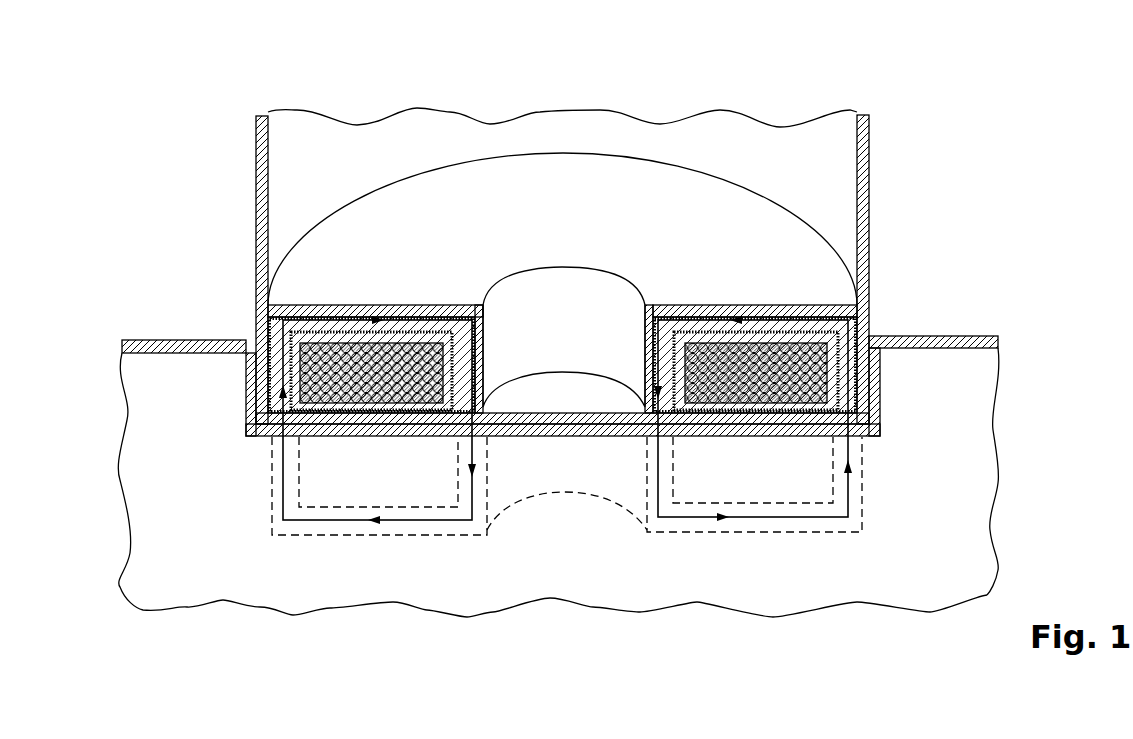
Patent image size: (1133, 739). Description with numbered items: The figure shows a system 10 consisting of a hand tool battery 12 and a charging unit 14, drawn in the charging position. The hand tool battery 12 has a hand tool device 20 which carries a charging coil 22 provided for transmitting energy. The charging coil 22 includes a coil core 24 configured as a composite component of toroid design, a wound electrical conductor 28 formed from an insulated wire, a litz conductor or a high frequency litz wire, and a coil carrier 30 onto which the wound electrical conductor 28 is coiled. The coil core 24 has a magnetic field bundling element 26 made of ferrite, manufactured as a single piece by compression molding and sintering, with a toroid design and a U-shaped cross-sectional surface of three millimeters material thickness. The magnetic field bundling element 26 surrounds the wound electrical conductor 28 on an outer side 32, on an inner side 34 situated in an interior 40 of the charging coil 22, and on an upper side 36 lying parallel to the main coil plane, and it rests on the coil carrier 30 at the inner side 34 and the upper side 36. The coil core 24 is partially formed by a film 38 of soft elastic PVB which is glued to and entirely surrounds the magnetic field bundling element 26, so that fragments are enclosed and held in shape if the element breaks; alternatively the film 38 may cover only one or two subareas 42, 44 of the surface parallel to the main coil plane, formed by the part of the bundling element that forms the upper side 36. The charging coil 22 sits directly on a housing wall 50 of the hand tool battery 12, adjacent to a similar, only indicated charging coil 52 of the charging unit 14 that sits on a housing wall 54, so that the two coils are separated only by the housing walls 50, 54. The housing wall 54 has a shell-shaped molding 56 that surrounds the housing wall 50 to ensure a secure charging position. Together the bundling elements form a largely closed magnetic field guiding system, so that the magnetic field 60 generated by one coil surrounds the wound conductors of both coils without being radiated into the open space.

The system 10 is at (633, 340).
The hand tool battery 12 is at (988, 138).
The charging unit 14 is at (1006, 299).
The hand tool device 20 is at (263, 111).
The charging coil 22 is at (308, 201).
The coil core 24 is at (268, 317).
The magnetic field bundling element 26 is at (443, 332).
The wound electrical conductor 28 is at (400, 368).
The coil carrier 30 is at (818, 331).
The outer side 32 is at (841, 364).
The inner side 34 is at (735, 303).
The upper side 36 is at (344, 344).
The film 38 is at (797, 305).
The interior 40 is at (574, 304).
The subarea 42 is at (765, 321).
The subarea 44 is at (684, 364).
The housing wall 50 is at (523, 436).
The charging coil 52 is at (312, 567).
The housing wall 54 is at (589, 434).
The shell-shaped molding 56 is at (246, 402).
The magnetic field 60 is at (848, 492).